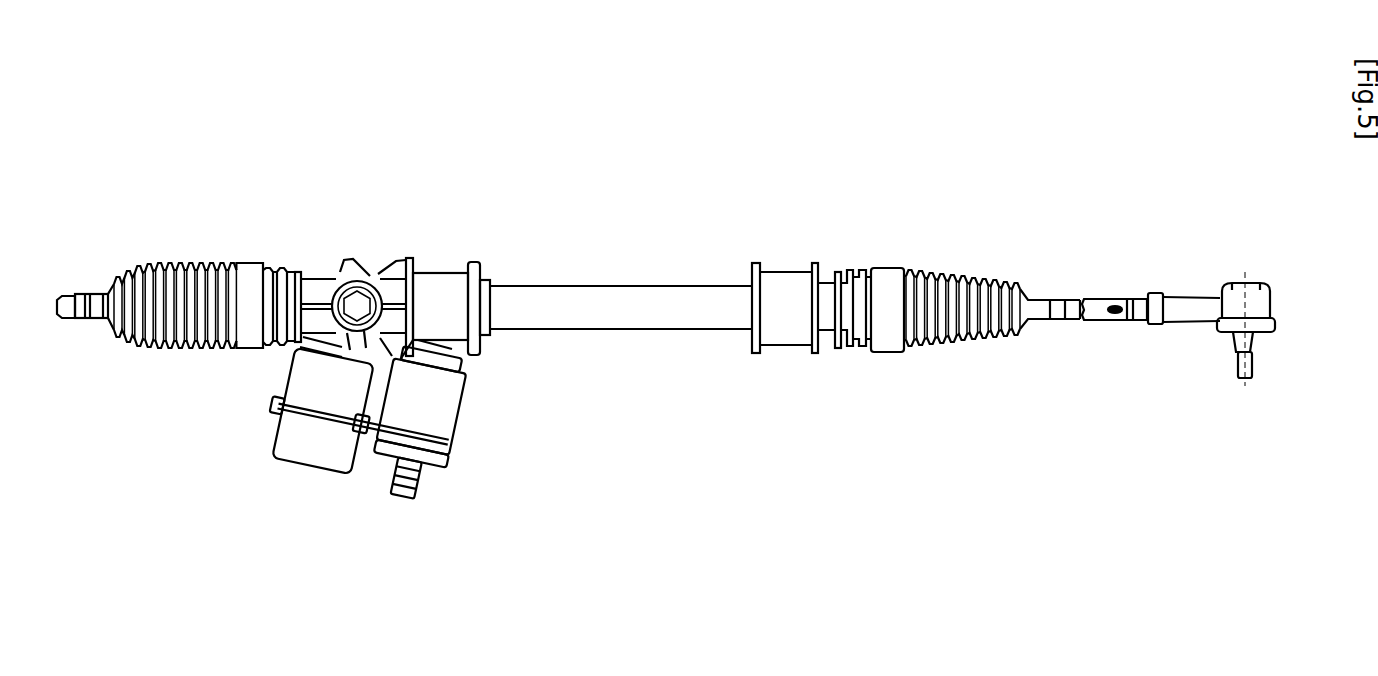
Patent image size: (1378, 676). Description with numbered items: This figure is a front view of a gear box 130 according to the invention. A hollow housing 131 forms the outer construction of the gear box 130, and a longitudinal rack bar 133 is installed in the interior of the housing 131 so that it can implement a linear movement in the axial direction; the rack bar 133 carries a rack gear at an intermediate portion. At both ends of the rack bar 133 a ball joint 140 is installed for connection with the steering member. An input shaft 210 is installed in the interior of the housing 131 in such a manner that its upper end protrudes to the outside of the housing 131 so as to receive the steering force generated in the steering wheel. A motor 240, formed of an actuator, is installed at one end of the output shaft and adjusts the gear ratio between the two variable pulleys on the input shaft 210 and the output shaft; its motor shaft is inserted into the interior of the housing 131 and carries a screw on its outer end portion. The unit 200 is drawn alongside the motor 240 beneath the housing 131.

The gear box 130 is at (819, 230).
The housing 131 is at (621, 257).
The rack bar 133 is at (1092, 303).
The ball joint 140 is at (1240, 303).
The actuator unit 200 is at (470, 465).
The input shaft 210 is at (397, 500).
The motor 240 is at (290, 480).